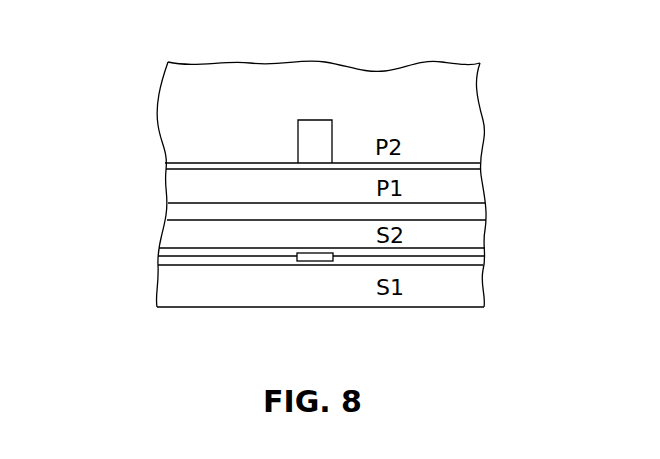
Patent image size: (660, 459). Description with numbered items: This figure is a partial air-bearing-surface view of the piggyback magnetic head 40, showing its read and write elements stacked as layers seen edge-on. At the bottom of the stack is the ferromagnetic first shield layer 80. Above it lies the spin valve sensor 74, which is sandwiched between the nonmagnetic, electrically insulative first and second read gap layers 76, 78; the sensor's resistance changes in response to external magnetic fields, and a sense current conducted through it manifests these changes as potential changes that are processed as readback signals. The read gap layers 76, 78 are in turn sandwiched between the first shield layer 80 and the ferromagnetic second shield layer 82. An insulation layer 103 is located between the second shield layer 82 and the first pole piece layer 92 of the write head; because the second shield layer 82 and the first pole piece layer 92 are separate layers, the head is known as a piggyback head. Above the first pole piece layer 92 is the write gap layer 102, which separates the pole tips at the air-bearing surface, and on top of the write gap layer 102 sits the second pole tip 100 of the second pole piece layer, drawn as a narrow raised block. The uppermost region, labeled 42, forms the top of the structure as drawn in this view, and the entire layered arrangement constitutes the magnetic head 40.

The piggyback magnetic head 40 is at (500, 79).
The top pole layer P2 42 is at (168, 92).
The second pole tip 100 is at (313, 128).
The write gap layer 102 is at (236, 163).
The first pole piece layer 92 is at (170, 187).
The insulation layer 103 is at (473, 213).
The second shield layer 82 is at (165, 237).
The second read gap layer 78 is at (442, 253).
The first read gap layer 76 is at (222, 265).
The spin valve sensor 74 is at (314, 261).
The first shield layer 80 is at (473, 290).